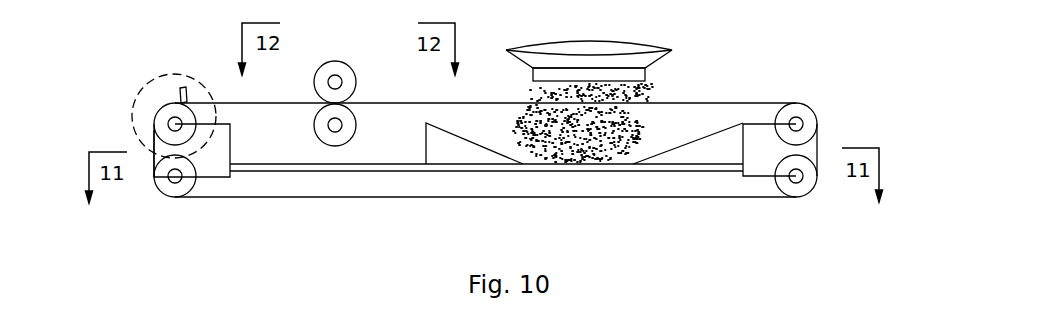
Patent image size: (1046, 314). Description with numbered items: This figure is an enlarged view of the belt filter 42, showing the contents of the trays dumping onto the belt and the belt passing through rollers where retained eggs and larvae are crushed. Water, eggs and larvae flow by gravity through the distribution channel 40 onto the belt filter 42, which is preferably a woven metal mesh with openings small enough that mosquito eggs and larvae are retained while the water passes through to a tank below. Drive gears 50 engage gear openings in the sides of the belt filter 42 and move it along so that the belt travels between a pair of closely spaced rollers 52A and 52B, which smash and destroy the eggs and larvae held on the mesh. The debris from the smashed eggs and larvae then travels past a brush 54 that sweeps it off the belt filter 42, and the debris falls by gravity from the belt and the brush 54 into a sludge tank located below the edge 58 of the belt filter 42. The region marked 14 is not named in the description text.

The roller drive assembly 14 is at (137, 97).
The distribution channel 40 is at (652, 52).
The belt filter 42 is at (717, 103).
The drive gears 50 is at (170, 103).
The roller 52A is at (327, 61).
The roller 52B is at (332, 146).
The brush 54 is at (184, 87).
The edge 58 is at (157, 147).